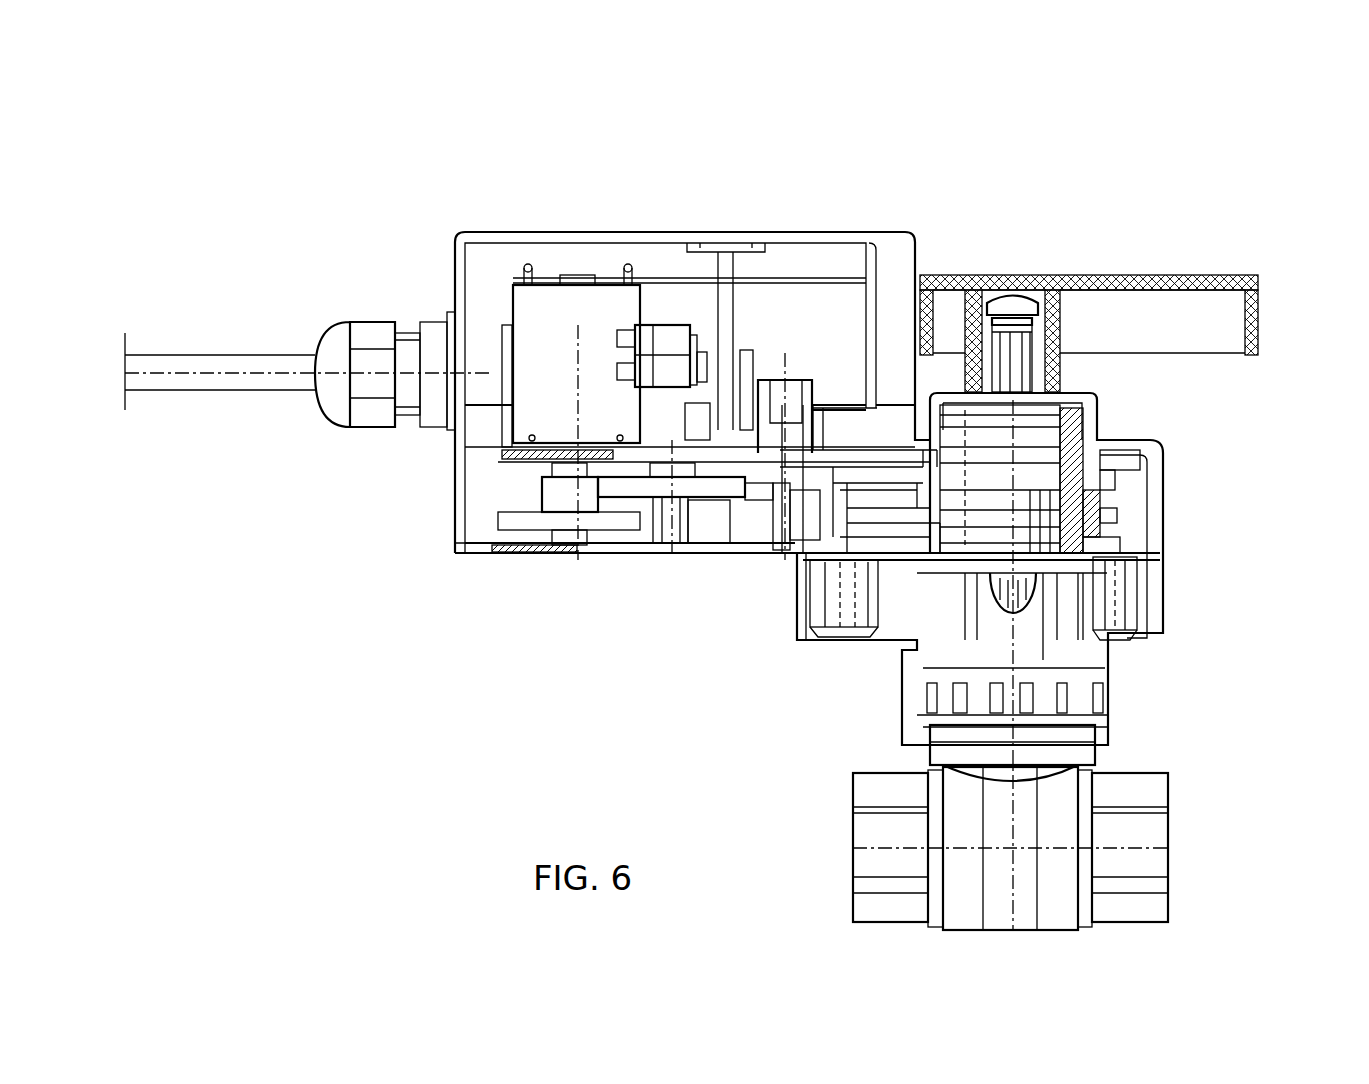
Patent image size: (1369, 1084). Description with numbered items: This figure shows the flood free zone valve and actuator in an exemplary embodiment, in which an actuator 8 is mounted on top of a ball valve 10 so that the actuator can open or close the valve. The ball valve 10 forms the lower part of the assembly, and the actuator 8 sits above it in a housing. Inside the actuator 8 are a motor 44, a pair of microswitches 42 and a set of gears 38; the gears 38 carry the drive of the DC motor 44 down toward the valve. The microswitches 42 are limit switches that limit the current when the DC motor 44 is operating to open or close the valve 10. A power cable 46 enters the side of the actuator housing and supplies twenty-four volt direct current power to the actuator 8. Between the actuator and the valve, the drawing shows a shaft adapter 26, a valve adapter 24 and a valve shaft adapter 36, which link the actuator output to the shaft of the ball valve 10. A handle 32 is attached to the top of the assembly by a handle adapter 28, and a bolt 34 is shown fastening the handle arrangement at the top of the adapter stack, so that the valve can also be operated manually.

The actuator 8 is at (643, 229).
The power cable 46 is at (213, 360).
The motor 44 is at (551, 366).
The microswitches 42 is at (665, 362).
The gears 38 is at (703, 508).
The valve shaft adapter 36 is at (1003, 580).
The bolt 34 is at (1010, 292).
The handle 32 is at (1110, 304).
The handle adapter 28 is at (1104, 400).
The shaft adapter 26 is at (1106, 498).
The valve adapter 24 is at (1112, 588).
The ball valve 10 is at (1085, 840).